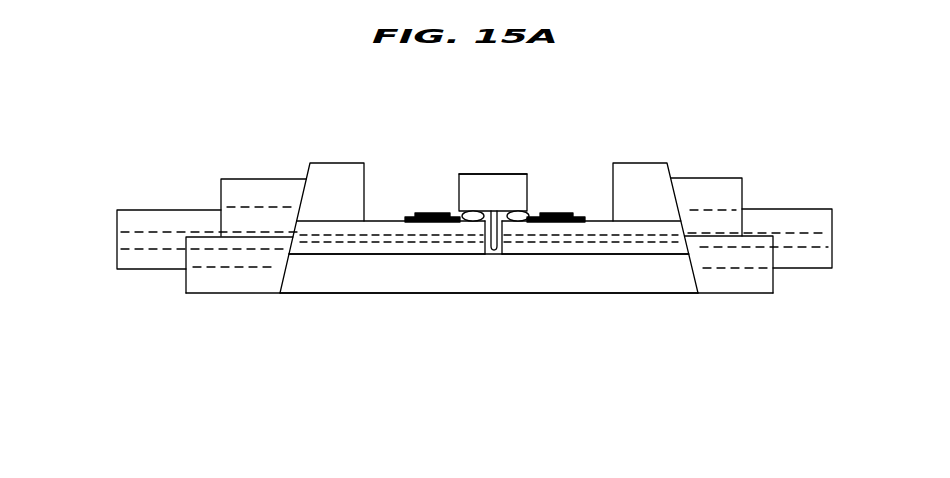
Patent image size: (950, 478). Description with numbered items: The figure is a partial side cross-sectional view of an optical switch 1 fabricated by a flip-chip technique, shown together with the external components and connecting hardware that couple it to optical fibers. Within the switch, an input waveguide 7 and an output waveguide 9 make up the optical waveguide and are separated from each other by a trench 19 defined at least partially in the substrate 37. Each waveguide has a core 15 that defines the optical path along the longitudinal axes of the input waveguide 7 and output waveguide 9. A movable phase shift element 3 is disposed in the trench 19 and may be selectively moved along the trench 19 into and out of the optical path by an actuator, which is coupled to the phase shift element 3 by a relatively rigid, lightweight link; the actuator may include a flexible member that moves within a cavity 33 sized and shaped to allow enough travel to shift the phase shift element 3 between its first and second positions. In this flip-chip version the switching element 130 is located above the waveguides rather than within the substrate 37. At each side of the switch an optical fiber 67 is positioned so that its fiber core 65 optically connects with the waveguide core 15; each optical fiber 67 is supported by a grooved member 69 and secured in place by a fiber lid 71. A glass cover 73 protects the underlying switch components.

The optical switch 1 is at (630, 318).
The phase shift element 3 is at (496, 250).
The input waveguide 7 is at (372, 220).
The output waveguide 9 is at (606, 220).
The core 15 is at (348, 238).
The trench 19 is at (502, 251).
The cavity 33 is at (473, 190).
The substrate 37 is at (412, 273).
The fiber core 65 is at (173, 240).
The optical fiber 67 is at (140, 209).
The grooved member 69 is at (218, 294).
The fiber lid 71 is at (265, 178).
The glass cover 73 is at (340, 162).
The switching element 130 is at (482, 173).